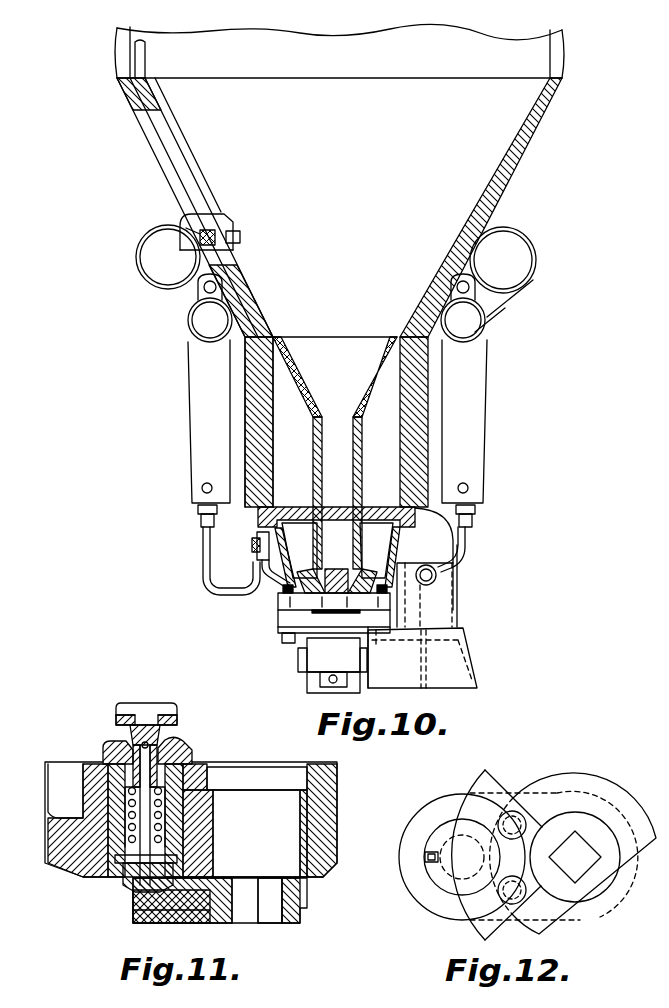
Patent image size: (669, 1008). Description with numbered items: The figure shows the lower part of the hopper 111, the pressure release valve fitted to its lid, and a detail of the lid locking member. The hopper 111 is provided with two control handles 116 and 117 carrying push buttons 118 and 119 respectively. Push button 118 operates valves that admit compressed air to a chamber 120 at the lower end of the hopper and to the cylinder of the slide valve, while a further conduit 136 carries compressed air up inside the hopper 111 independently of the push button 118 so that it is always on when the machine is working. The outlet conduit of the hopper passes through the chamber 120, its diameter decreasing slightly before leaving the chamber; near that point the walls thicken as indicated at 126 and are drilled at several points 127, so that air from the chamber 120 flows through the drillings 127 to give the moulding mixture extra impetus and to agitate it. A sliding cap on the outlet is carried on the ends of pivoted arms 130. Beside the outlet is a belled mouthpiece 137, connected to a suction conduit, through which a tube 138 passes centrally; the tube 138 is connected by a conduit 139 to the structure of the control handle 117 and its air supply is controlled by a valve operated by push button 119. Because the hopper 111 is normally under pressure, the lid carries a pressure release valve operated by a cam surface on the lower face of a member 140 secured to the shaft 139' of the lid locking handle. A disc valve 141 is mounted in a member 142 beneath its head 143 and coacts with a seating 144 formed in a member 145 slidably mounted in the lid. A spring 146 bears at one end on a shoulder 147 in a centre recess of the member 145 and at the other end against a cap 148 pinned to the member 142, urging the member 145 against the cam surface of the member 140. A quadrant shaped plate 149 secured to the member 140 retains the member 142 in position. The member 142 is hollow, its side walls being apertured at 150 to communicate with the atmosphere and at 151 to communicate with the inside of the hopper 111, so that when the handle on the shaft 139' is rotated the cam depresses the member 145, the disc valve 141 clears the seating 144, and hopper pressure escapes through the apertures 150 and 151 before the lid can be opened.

In FIG. 10, the hopper 111 is at (155, 53).
In FIG. 10, the conduit 136 is at (183, 137).
In FIG. 10, the push button 118 is at (203, 318).
In FIG. 10, the push button 119 is at (468, 327).
In FIG. 10, the control handle 116 is at (205, 423).
In FIG. 10, the control handle 117 is at (473, 442).
In FIG. 10, the chamber 120 is at (297, 533).
In FIG. 10, the drillings 127 is at (272, 575).
In FIG. 10, the thickened walls 126 is at (290, 587).
In FIG. 10, the conduit 139 is at (456, 567).
In FIG. 10, the arms 130 is at (299, 660).
In FIG. 10, the belled mouthpiece 137 is at (464, 633).
In FIG. 10, the tube 138 is at (464, 656).
In FIG. 11, the disc valve 141 is at (120, 719).
In FIG. 11, the member 142 is at (150, 704).
In FIG. 11, the head 143 is at (128, 703).
In FIG. 11, the seating 144 is at (128, 738).
In FIG. 11, the member 145 is at (184, 762).
In FIG. 11, the spring 146 is at (178, 830).
In FIG. 11, the shoulder 147 is at (172, 778).
In FIG. 11, the cap 148 is at (138, 889).
In FIG. 11, the quadrant shaped plate 149 is at (148, 923).
In FIG. 12, the quadrant shaped plate 149 is at (500, 757).
In FIG. 11, the apertures 150 is at (172, 812).
In FIG. 11, the aperture 151 is at (163, 742).
In FIG. 11, the shaft 139' is at (289, 914).
In FIG. 12, the shaft 139' is at (575, 820).
In FIG. 11, the member 140 is at (308, 897).
In FIG. 12, the member 140 is at (548, 928).